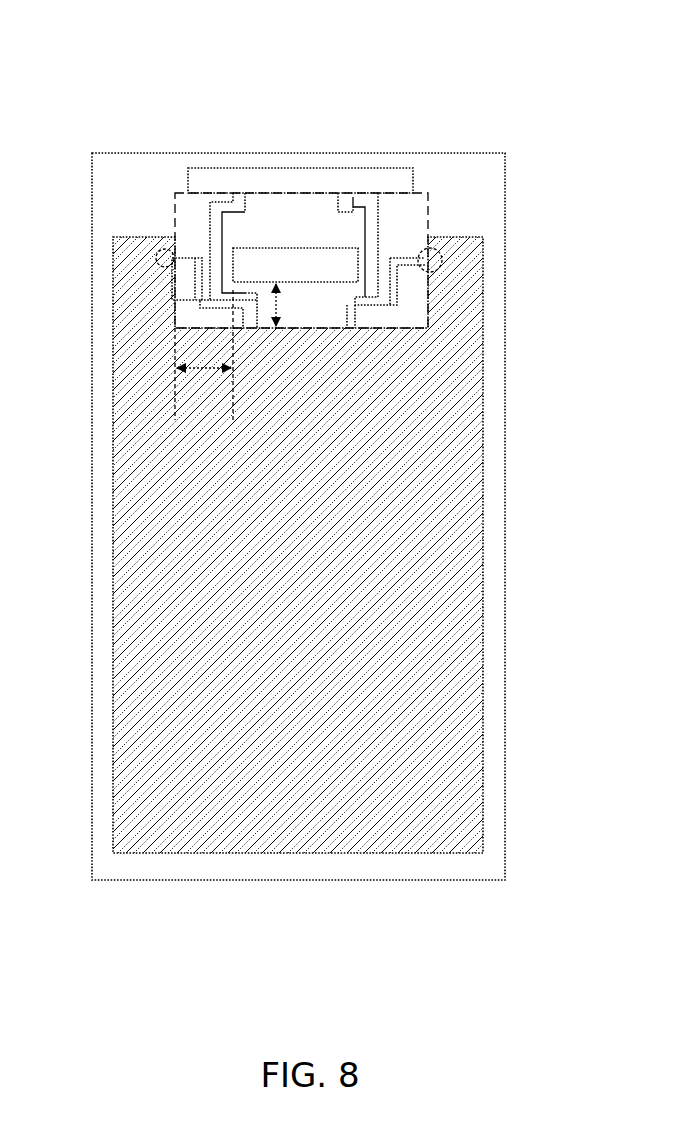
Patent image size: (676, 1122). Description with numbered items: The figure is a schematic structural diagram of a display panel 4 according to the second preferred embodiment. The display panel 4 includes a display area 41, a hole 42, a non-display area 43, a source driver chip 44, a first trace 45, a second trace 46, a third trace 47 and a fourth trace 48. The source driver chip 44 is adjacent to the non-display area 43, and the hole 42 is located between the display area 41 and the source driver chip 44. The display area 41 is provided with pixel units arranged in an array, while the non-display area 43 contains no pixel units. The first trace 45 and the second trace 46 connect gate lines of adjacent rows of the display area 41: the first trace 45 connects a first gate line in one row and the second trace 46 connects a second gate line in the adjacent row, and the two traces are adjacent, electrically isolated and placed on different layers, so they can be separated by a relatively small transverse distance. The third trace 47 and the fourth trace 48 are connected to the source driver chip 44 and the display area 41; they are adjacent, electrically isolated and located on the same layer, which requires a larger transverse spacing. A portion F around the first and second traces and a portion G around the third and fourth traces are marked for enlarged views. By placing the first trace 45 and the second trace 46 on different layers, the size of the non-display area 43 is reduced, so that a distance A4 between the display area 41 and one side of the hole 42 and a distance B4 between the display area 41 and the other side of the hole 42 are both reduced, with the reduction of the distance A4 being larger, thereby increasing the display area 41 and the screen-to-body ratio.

The display panel 4 is at (120, 44).
The display area 41 is at (485, 507).
The hole 42 is at (270, 248).
The non-display area 43 is at (430, 231).
The source driver chip 44 is at (240, 167).
The first trace 45 is at (190, 258).
The second trace 46 is at (177, 280).
The third trace 47 is at (385, 200).
The fourth trace 48 is at (355, 207).
The portion F is at (148, 238).
The portion G is at (448, 278).
The distance A4 is at (204, 355).
The distance B4 is at (297, 305).